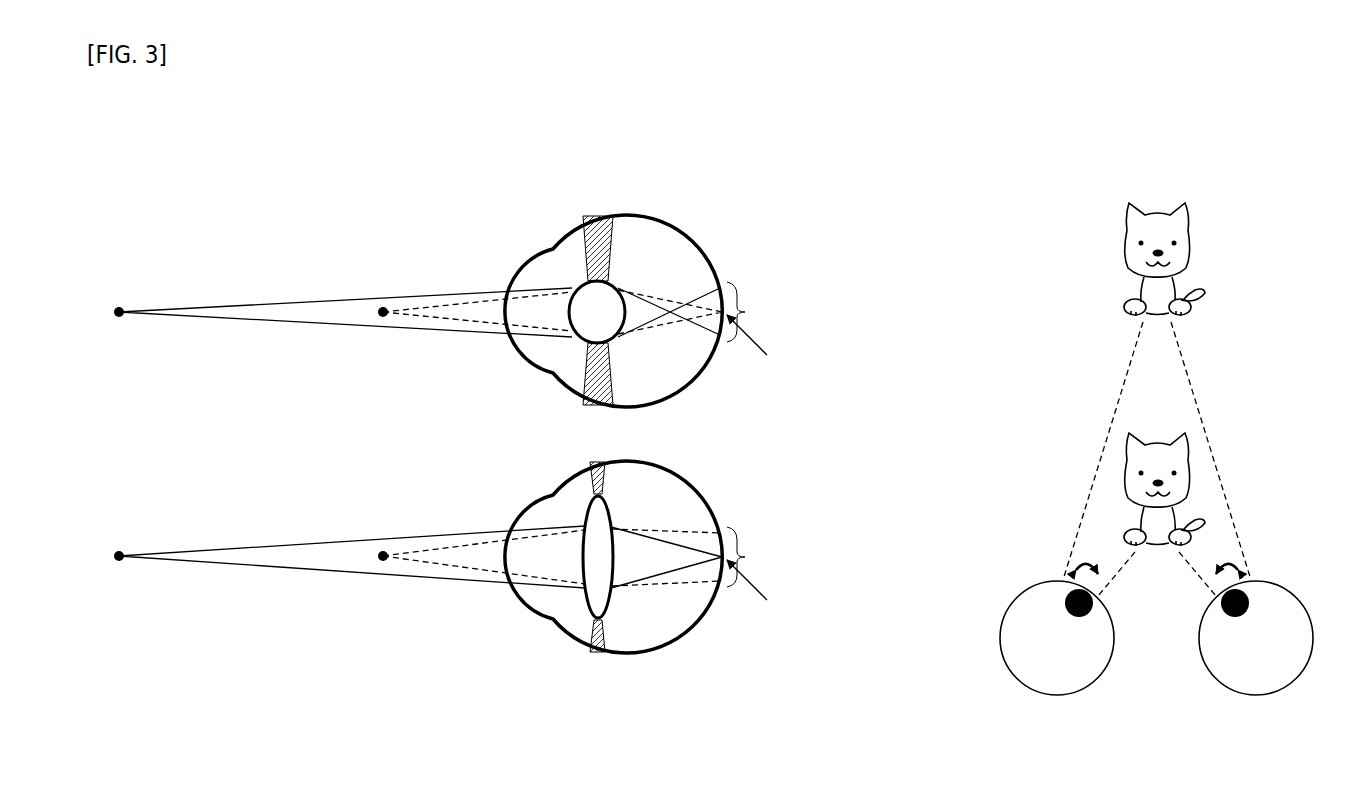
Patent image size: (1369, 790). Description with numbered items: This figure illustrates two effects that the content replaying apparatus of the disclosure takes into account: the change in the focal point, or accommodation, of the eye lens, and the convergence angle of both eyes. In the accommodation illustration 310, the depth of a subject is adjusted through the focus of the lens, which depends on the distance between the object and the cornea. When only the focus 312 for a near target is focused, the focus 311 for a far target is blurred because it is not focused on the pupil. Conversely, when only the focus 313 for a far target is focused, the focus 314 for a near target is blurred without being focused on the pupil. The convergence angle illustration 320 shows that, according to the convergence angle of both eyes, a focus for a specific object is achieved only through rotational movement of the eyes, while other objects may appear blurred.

The accommodation illustration 310 is at (498, 136).
The focus for a far target 311 is at (312, 322).
The focus for a near target 312 is at (450, 320).
The focus for a far target 313 is at (295, 570).
The focus for a near target 314 is at (433, 563).
The convergence angle illustration 320 is at (1171, 136).